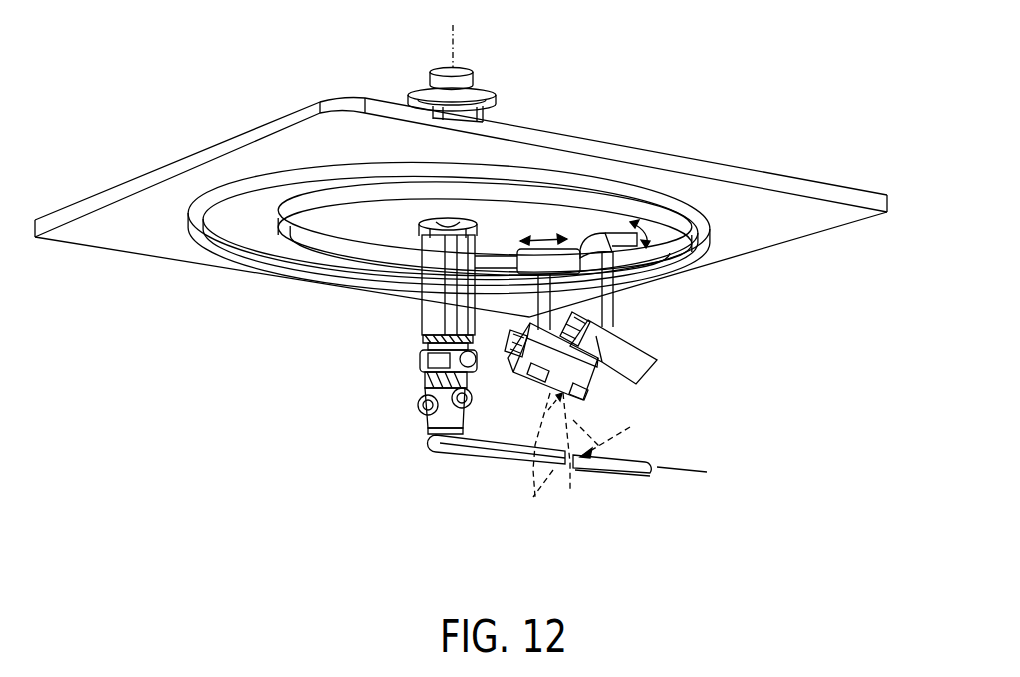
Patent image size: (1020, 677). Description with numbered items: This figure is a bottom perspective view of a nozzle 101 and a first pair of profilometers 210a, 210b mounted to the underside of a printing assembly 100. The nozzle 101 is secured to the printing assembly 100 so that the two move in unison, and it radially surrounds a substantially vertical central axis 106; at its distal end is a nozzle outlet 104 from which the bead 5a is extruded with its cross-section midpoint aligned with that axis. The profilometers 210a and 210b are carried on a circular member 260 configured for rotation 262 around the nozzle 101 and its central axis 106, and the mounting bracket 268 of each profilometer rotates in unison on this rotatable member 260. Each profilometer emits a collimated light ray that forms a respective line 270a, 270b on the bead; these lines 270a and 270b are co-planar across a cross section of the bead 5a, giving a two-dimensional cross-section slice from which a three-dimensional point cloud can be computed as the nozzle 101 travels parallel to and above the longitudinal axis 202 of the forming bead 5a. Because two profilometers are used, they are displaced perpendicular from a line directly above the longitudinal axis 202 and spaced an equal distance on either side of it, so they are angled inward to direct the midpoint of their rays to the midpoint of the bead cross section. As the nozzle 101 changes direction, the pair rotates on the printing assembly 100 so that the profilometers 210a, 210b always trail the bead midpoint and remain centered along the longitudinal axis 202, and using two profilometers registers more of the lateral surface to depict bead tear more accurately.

The printing assembly 100 is at (827, 183).
The nozzle 101 is at (420, 307).
The nozzle outlet 104 is at (432, 430).
The central axis 106 is at (462, 52).
The longitudinal axis 202 is at (680, 466).
The first profilometer 210a is at (527, 383).
The second profilometer 210b is at (657, 373).
The circular member 260 is at (598, 212).
The rotation 262 is at (658, 230).
The mounting bracket 268 is at (603, 242).
The first line 270a is at (622, 433).
The second line 270b is at (553, 480).
The bead 5a is at (617, 477).